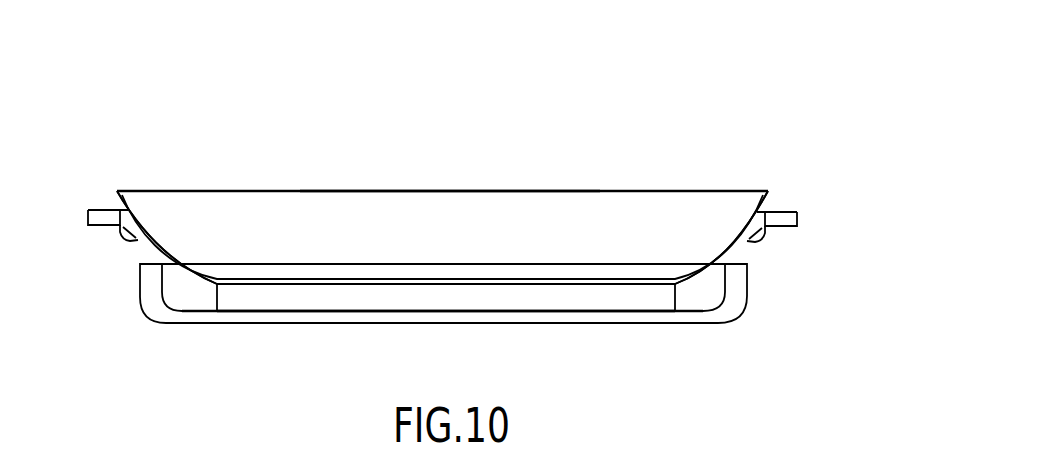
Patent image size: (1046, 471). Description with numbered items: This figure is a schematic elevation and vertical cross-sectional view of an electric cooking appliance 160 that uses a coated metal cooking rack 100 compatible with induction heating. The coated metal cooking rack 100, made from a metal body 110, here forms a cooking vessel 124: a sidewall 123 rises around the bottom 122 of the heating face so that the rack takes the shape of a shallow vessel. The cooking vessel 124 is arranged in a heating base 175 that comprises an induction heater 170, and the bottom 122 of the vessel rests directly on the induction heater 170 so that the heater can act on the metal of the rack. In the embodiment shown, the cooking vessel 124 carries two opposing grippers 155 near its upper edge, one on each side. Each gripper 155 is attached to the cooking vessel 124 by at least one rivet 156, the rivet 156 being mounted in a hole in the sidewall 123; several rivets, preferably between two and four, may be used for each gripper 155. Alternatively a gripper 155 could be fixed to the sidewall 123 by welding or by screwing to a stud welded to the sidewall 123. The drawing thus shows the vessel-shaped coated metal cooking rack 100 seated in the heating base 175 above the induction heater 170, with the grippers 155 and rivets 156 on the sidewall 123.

The coated metal cooking rack 100 is at (139, 252).
The metal body 110 is at (700, 288).
The bottom 122 is at (443, 288).
The sidewall 123 is at (742, 245).
The cooking vessel 124 is at (395, 210).
The gripper 155 is at (105, 210).
The rivet 156 is at (123, 237).
The electric cooking appliance 160 is at (584, 182).
The induction heater 170 is at (537, 298).
The heating base 175 is at (368, 314).